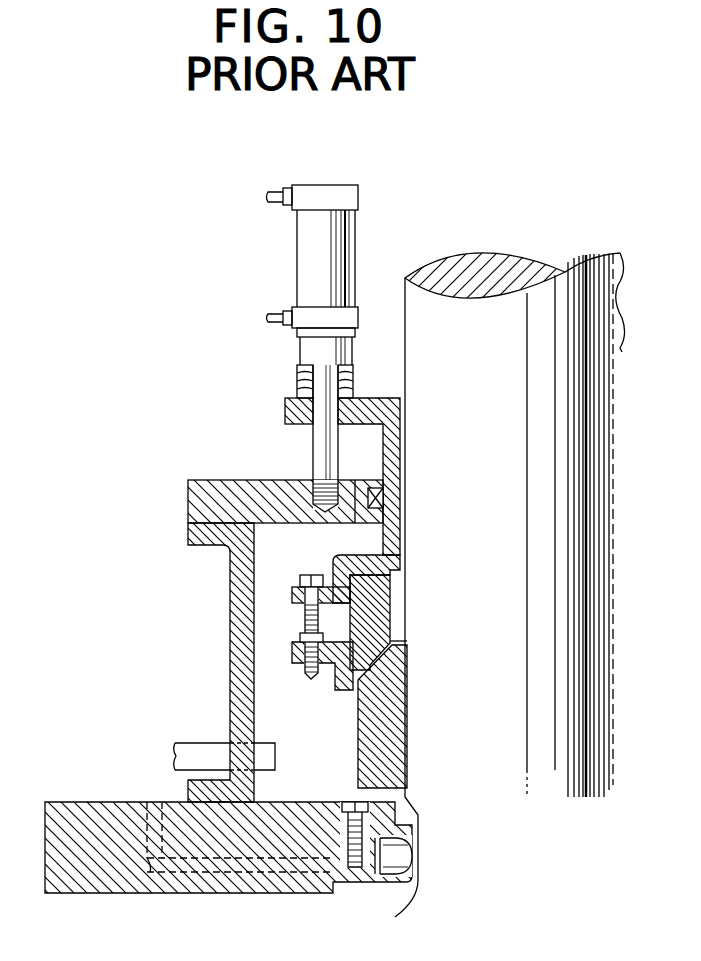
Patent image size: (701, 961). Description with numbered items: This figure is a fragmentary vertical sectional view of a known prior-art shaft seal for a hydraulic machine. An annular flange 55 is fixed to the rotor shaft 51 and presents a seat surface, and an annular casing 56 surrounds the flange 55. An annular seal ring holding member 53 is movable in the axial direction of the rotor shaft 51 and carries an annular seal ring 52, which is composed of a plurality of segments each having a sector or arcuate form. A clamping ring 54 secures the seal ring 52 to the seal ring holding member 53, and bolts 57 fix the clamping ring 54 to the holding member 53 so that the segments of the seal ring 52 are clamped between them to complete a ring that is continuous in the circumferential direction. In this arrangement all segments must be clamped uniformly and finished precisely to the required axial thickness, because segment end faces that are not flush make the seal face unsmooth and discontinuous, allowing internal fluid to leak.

The rotor shaft 51 is at (533, 308).
The seal ring 52 is at (377, 620).
The seal ring holding member 53 is at (285, 415).
The clamping ring 54 is at (290, 655).
The annular flange 55 is at (387, 745).
The annular casing 56 is at (237, 493).
The bolts 57 is at (302, 617).